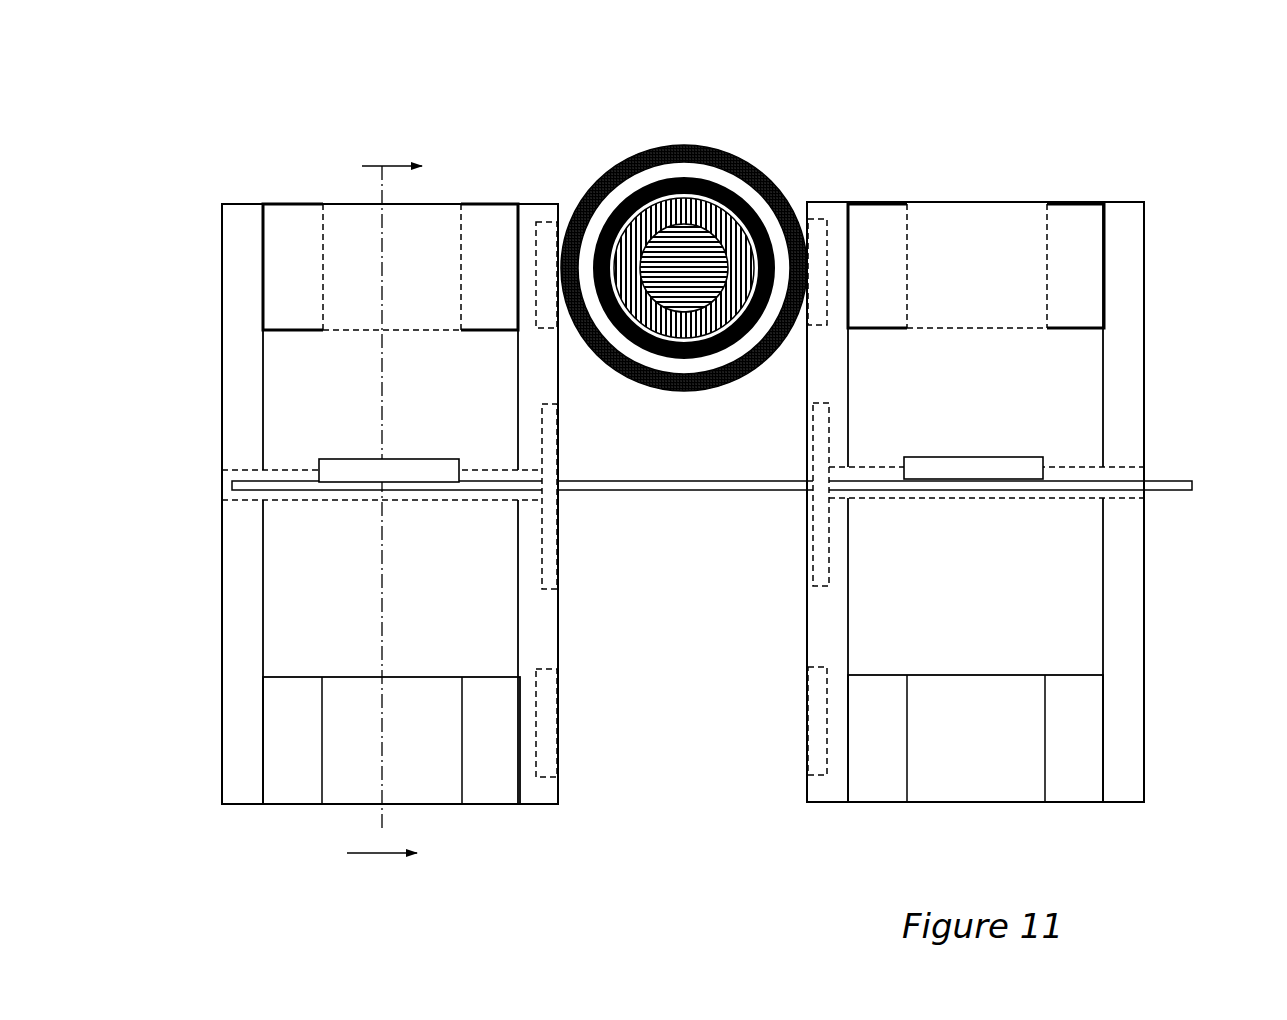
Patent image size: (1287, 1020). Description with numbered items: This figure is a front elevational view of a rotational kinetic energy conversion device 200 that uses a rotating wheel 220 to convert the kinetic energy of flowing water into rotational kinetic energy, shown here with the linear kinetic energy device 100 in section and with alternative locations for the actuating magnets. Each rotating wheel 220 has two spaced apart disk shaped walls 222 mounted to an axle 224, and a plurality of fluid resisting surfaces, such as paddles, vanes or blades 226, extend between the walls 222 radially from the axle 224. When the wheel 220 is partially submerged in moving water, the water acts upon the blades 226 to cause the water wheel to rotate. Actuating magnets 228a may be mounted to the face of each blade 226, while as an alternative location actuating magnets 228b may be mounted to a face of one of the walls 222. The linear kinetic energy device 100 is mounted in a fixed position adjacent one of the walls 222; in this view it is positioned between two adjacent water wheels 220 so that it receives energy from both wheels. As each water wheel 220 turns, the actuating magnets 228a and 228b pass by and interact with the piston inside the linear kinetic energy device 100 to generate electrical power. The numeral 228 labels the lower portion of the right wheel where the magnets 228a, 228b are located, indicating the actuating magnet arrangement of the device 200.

The linear kinetic energy device 100 is at (695, 142).
The rotational kinetic energy conversion device 200 is at (700, 474).
The rotating wheel 220 is at (218, 303).
The disk shaped walls 222 is at (218, 617).
The axle 224 is at (650, 487).
The blades 226 is at (502, 287).
The sensor unit 228 is at (1043, 785).
The actuating magnets 228a is at (478, 212).
The actuating magnets 228b is at (550, 197).